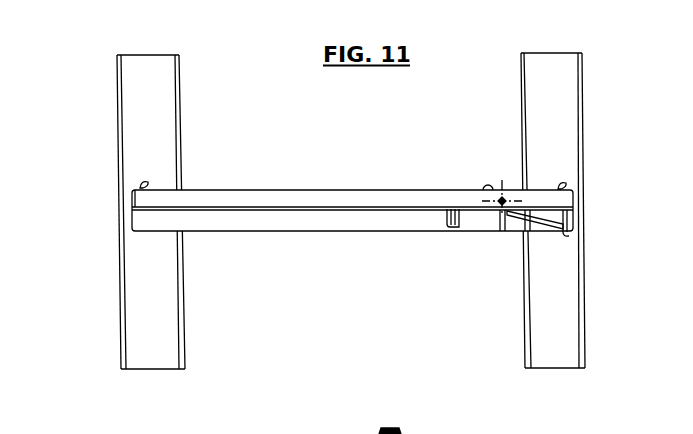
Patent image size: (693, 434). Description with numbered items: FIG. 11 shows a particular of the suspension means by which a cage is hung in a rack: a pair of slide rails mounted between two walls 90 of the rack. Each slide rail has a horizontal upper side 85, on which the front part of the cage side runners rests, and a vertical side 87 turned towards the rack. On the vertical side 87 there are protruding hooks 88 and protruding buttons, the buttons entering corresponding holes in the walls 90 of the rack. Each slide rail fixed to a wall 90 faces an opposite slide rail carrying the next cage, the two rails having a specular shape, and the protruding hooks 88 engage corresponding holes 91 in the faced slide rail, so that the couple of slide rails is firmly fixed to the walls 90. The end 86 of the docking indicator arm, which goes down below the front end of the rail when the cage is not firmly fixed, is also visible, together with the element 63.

The hook 63 is at (138, 185).
The horizontal upper side 85 is at (300, 188).
The end of the opposite arm of the docking indicator 86 is at (565, 237).
The vertical side 87 is at (295, 218).
The protruding hook 88 is at (460, 228).
The wall of the rack 90 is at (163, 352).
The hole 91 is at (447, 210).